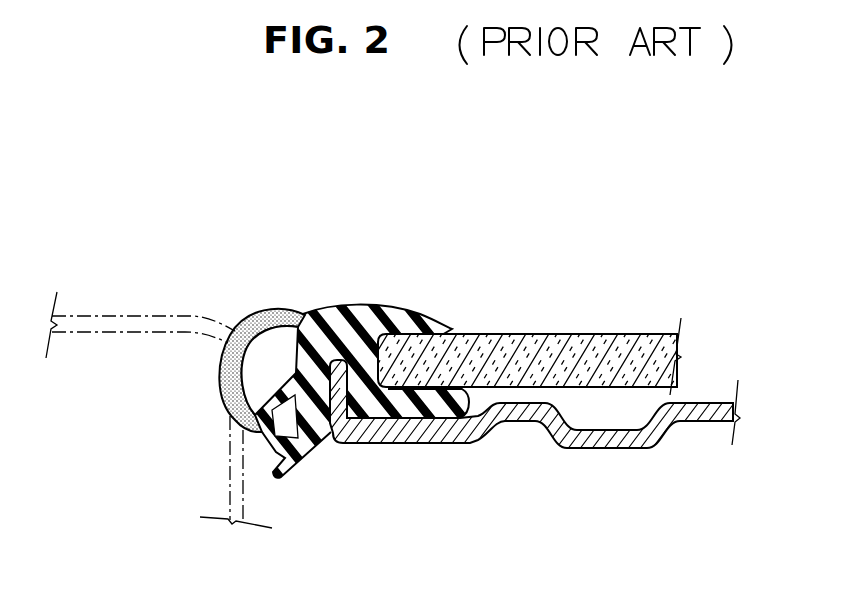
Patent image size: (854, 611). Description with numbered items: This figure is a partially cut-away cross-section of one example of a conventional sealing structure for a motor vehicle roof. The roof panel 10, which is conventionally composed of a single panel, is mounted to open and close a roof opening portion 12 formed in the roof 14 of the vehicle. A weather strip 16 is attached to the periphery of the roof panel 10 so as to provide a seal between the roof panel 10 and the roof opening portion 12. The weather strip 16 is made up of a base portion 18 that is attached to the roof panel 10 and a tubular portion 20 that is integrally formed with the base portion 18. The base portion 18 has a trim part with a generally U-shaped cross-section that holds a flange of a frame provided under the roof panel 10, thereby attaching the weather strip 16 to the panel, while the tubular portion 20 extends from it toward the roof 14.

The roof panel 10 is at (613, 332).
The roof opening portion 12 is at (243, 495).
The roof 14 is at (147, 315).
The weather strip 16 is at (392, 298).
The base portion 18 is at (333, 343).
The tubular portion 20 is at (264, 312).